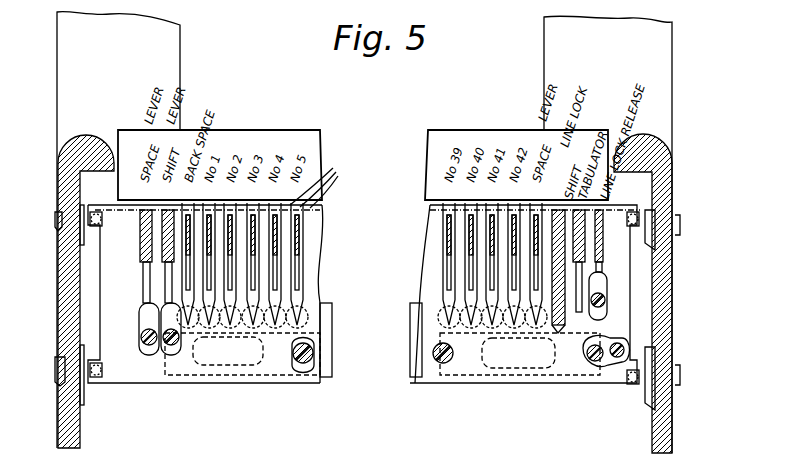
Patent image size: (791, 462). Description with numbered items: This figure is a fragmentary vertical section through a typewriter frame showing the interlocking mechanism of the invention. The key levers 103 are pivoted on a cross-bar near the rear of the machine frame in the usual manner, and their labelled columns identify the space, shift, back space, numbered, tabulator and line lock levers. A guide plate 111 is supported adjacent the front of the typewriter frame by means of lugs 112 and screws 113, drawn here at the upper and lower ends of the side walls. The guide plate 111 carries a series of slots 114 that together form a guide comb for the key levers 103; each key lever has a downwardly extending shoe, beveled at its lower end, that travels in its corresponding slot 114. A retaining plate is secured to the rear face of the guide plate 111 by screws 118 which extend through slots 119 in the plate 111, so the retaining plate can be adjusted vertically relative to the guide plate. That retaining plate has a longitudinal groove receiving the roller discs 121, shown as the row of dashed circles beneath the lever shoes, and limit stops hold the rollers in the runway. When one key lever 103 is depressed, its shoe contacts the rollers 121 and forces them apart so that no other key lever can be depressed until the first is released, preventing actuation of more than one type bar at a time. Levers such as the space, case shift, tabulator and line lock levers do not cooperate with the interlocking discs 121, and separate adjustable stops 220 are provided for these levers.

The key levers 103 is at (292, 250).
The guide plate 111 is at (163, 372).
The lugs 112 is at (97, 223).
The screws 113 is at (56, 222).
The slots 114 is at (142, 252).
The screws 118 is at (316, 360).
The slots 119 is at (302, 367).
The roller discs 121 is at (313, 305).
The adjustable stops 220 is at (168, 345).